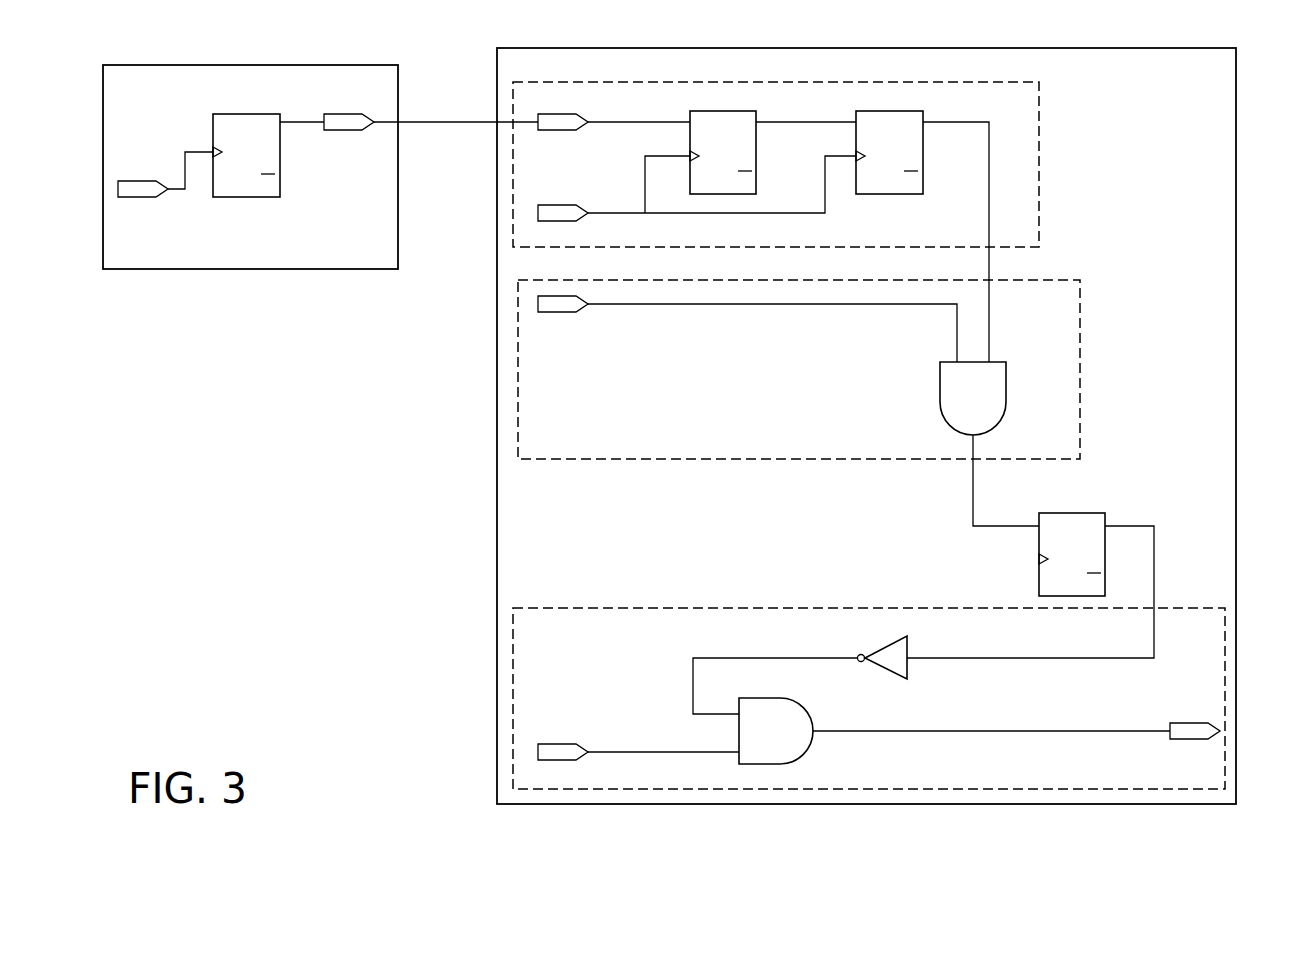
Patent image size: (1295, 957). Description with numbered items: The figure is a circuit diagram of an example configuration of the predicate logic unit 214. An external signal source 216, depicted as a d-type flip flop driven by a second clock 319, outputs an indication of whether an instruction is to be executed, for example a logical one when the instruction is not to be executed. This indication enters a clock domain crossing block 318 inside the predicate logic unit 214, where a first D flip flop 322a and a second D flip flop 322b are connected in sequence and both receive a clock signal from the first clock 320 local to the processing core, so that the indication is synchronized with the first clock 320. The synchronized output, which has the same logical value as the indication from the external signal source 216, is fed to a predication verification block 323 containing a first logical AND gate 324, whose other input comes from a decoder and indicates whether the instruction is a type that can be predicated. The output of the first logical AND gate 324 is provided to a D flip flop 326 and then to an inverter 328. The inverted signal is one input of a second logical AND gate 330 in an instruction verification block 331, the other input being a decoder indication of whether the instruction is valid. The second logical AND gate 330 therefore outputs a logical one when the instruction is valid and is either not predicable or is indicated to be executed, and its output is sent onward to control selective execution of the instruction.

The predicate logic unit 214 is at (1195, 48).
The external signal source 216 is at (291, 65).
The clock domain crossing block 318 is at (1040, 130).
The second clock 319 is at (128, 181).
The first clock 320 is at (551, 205).
The first D flip flop 322a is at (718, 111).
The second D flip flop 322b is at (878, 111).
The predication verification block 323 is at (1082, 326).
The first logical AND gate 324 is at (1006, 380).
The D flip flop 326 is at (1075, 513).
The inverter 328 is at (898, 636).
The second logical AND gate 330 is at (757, 698).
The instruction verification block 331 is at (1227, 662).